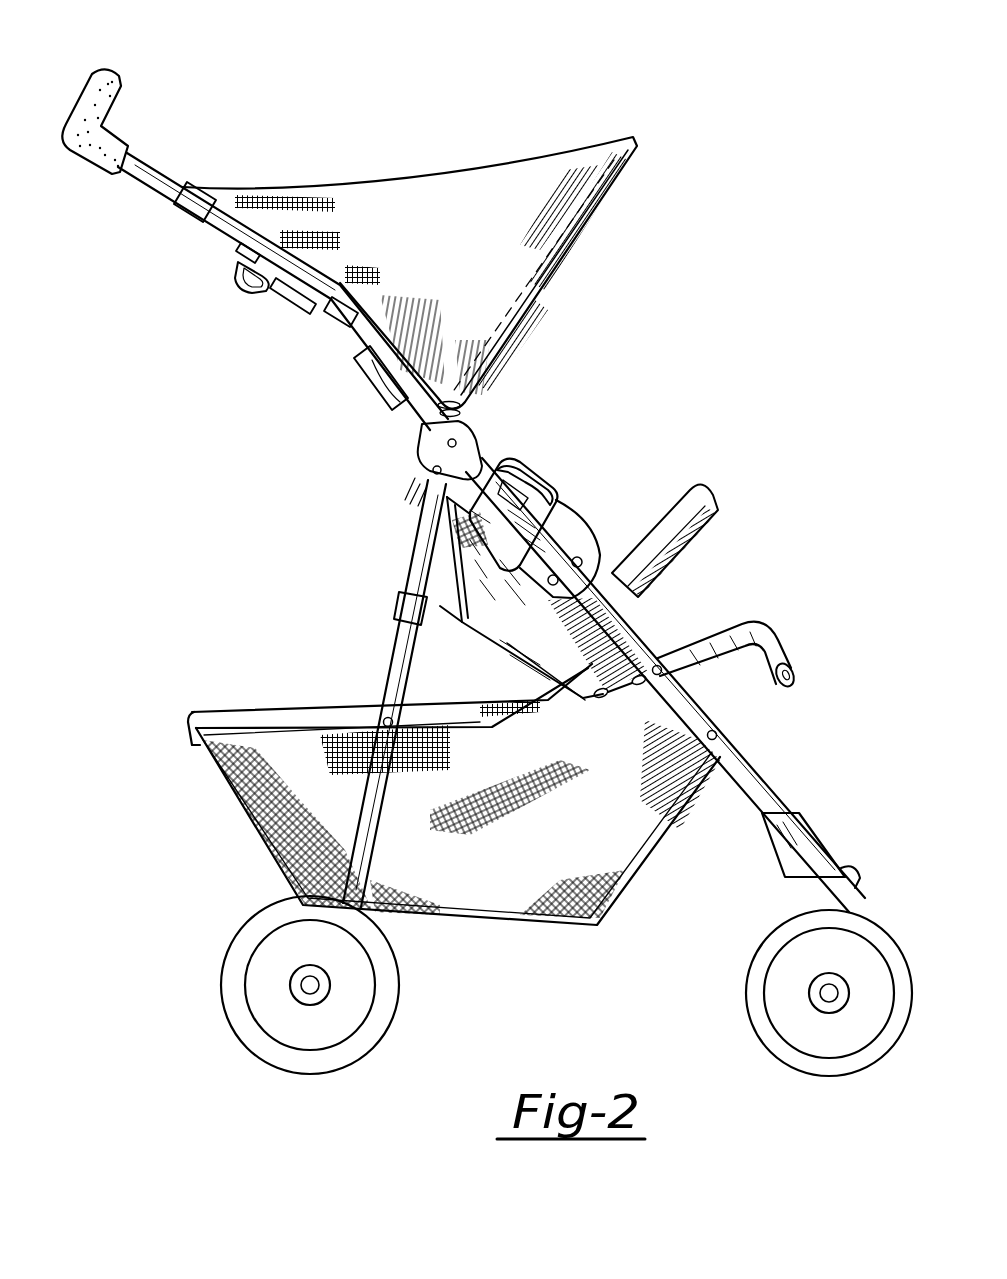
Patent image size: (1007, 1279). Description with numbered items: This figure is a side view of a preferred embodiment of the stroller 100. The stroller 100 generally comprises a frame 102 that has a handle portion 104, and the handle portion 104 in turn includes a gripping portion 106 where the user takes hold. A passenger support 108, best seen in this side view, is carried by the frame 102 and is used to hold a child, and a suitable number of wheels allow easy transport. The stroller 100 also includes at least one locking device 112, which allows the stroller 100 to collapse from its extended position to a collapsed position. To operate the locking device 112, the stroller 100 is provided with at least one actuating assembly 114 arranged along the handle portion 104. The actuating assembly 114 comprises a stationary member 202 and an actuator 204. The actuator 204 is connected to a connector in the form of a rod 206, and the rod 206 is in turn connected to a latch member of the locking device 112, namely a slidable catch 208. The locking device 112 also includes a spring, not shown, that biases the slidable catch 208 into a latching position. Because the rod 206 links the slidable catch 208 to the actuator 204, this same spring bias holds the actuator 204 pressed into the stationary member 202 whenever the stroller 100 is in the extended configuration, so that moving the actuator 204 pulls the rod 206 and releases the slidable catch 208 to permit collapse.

The stroller 100 is at (213, 646).
The frame 102 is at (757, 785).
The handle portion 104 is at (133, 165).
The gripping portion 106 is at (104, 72).
The passenger support 108 is at (710, 643).
The locking device 112 is at (566, 498).
The actuating assembly 114 is at (176, 308).
The stationary member 202 is at (235, 252).
The actuator 204 is at (262, 292).
The rod 206 is at (360, 366).
The slidable catch 208 is at (513, 462).